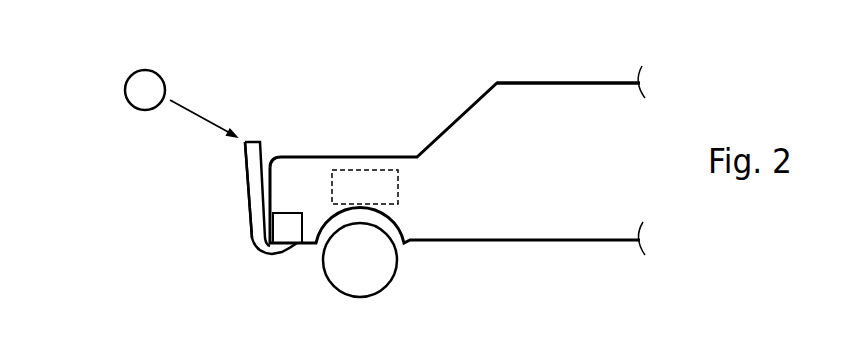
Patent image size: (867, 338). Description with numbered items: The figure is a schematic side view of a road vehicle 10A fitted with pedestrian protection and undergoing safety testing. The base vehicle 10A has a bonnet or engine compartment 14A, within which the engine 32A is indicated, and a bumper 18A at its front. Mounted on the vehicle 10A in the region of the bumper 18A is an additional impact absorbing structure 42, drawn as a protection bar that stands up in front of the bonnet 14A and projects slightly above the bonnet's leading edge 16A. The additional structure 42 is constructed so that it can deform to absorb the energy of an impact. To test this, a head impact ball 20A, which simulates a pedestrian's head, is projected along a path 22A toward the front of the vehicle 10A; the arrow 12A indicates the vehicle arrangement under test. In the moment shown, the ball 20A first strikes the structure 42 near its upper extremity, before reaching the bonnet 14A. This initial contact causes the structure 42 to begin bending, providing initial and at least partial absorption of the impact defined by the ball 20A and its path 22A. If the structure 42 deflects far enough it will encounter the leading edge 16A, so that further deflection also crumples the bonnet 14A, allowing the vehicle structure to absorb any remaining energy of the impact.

The road vehicle 10A is at (585, 95).
The assembly 12A is at (165, 154).
The bonnet 14A is at (330, 153).
The leading edge 16A is at (273, 153).
The bumper 18A is at (292, 233).
The head impact ball 20A is at (143, 90).
The path 22A is at (207, 120).
The engine 32A is at (373, 175).
The additional impact absorbing structure 42 is at (243, 180).